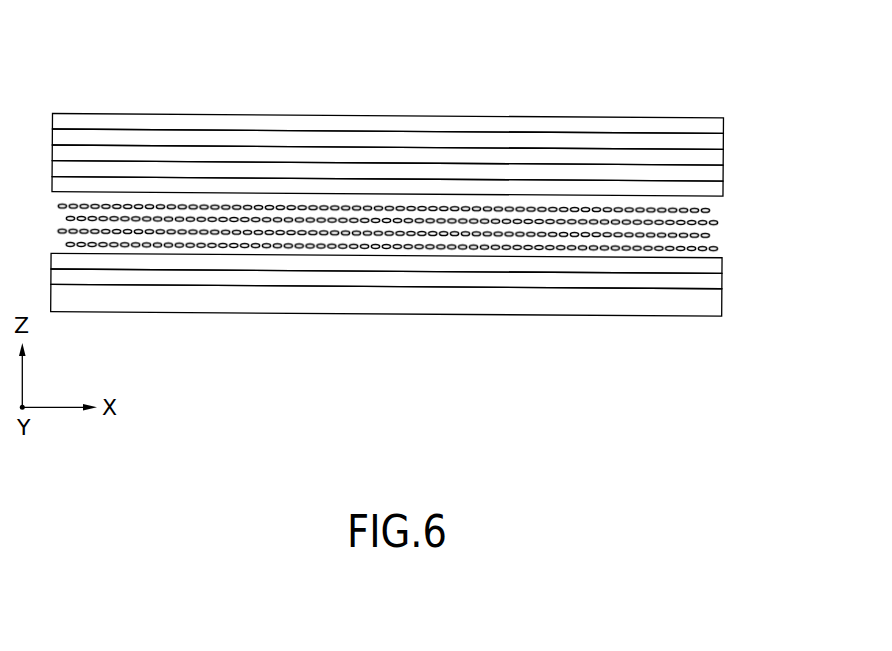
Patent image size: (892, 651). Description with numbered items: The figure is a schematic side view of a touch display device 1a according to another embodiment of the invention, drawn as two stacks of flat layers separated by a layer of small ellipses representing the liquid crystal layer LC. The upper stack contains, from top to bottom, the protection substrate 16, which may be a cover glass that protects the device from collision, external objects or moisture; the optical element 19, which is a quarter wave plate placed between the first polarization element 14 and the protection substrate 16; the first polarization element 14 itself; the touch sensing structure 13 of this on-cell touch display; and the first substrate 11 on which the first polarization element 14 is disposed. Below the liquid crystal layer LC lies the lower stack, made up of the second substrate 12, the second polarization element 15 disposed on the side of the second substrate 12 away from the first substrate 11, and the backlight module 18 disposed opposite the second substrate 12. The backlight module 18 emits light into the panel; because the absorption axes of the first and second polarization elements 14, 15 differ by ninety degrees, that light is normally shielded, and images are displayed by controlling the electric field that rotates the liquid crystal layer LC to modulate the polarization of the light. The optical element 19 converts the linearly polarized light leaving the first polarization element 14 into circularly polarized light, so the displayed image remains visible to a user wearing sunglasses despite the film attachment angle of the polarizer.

The touch display device 1a is at (419, 189).
The first substrate 11 is at (712, 189).
The second substrate 12 is at (717, 267).
The touch sensing structure 13 is at (713, 176).
The first polarization element 14 is at (713, 158).
The second polarization element 15 is at (716, 282).
The protection substrate 16 is at (653, 123).
The backlight module 18 is at (660, 308).
The optical element 19 is at (598, 137).
The liquid crystal layer LC is at (726, 230).